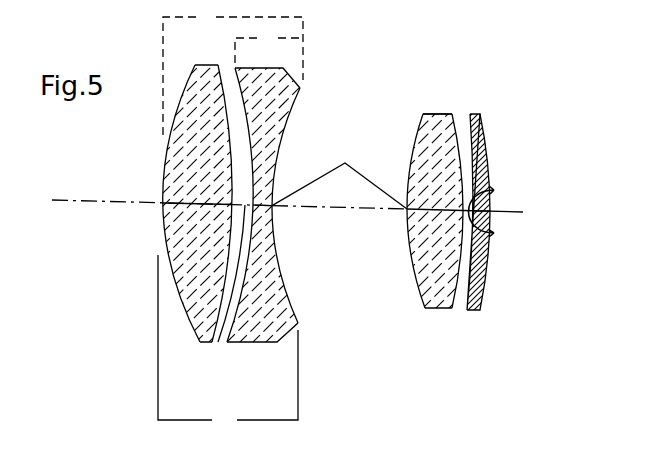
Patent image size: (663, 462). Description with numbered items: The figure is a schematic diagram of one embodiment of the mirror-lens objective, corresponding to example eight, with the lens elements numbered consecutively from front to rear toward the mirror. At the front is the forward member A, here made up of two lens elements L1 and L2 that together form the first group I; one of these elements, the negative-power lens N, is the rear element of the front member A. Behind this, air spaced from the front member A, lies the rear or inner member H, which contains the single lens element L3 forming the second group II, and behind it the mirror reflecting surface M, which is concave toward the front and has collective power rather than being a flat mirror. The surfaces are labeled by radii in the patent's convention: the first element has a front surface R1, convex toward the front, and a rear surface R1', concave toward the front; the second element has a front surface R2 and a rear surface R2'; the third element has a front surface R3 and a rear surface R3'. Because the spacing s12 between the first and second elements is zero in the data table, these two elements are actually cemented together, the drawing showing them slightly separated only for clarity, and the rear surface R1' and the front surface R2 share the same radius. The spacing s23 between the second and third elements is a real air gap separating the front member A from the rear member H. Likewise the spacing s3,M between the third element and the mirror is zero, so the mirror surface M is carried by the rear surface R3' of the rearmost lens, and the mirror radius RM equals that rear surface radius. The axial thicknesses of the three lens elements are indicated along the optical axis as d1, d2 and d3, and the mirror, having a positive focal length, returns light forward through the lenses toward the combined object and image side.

The front member A is at (233, 70).
The negative lens element of the front member N is at (269, 46).
The first lens group I is at (224, 230).
The second lens group II is at (432, 229).
The first lens L1 is at (178, 214).
The second lens L2 is at (269, 218).
The third lens L3 is at (432, 202).
The mirror reflecting surface M is at (494, 194).
The rear member H is at (440, 114).
The front surface radius of element 1 R1 is at (158, 203).
The rear surface radius of element 1 R1' is at (203, 185).
The front surface radius of element 2 R2 is at (230, 189).
The rear surface radius of element 2 R2' is at (301, 203).
The front surface radius of element 3 R3 is at (406, 205).
The rear surface radius of element 3 R3' is at (464, 169).
The mirror radius RM is at (489, 129).
The thickness of first lens d1 is at (197, 209).
The thickness of second lens d2 is at (262, 214).
The thickness of third lens d3 is at (435, 214).
The spacing between elements 1 and 2 s12 is at (220, 346).
The spacing between elements 2 and 3 s23 is at (338, 209).
The spacing between element 3 and the mirror s3,M is at (494, 233).